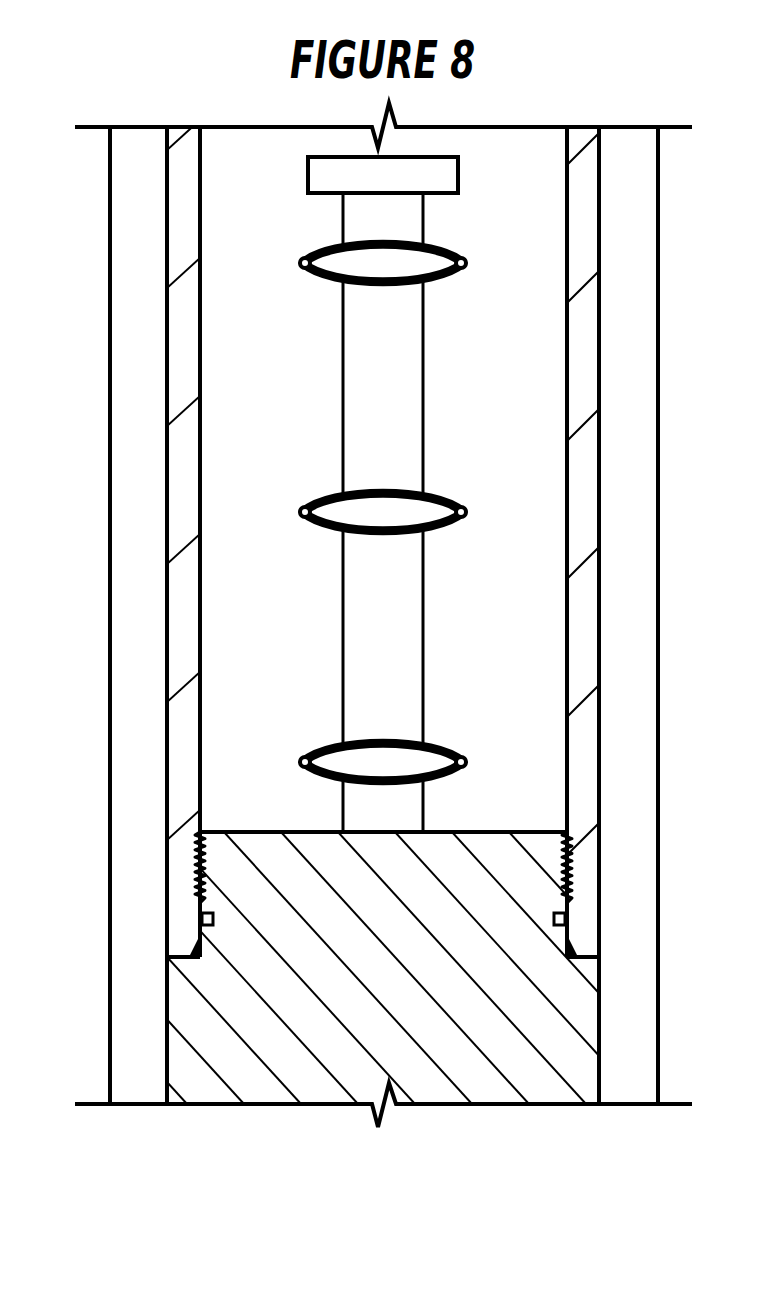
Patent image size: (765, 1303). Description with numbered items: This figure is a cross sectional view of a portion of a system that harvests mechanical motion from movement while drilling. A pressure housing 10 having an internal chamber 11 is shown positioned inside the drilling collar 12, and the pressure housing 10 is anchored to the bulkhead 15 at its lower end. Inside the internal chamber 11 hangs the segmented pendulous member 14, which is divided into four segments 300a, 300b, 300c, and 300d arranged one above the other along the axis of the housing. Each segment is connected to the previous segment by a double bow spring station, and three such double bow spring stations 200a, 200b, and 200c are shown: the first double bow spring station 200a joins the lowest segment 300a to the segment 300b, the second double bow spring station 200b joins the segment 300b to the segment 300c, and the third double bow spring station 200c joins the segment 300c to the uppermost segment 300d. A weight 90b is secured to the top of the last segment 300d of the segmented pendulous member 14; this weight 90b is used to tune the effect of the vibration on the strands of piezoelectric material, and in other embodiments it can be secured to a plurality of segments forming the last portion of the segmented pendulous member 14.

The pressure housing 10 is at (167, 406).
The internal chamber 11 is at (208, 220).
The drilling collar 12 is at (658, 406).
The segmented pendulous member 14 is at (270, 452).
The bulkhead 15 is at (167, 1036).
The weight 90b is at (459, 165).
The double bow spring station 200a is at (479, 762).
The double bow spring station 200b is at (479, 512).
The double bow spring station 200c is at (479, 262).
The segment 300a is at (423, 807).
The segment 300b is at (423, 635).
The segment 300c is at (423, 383).
The segment 300d is at (423, 216).